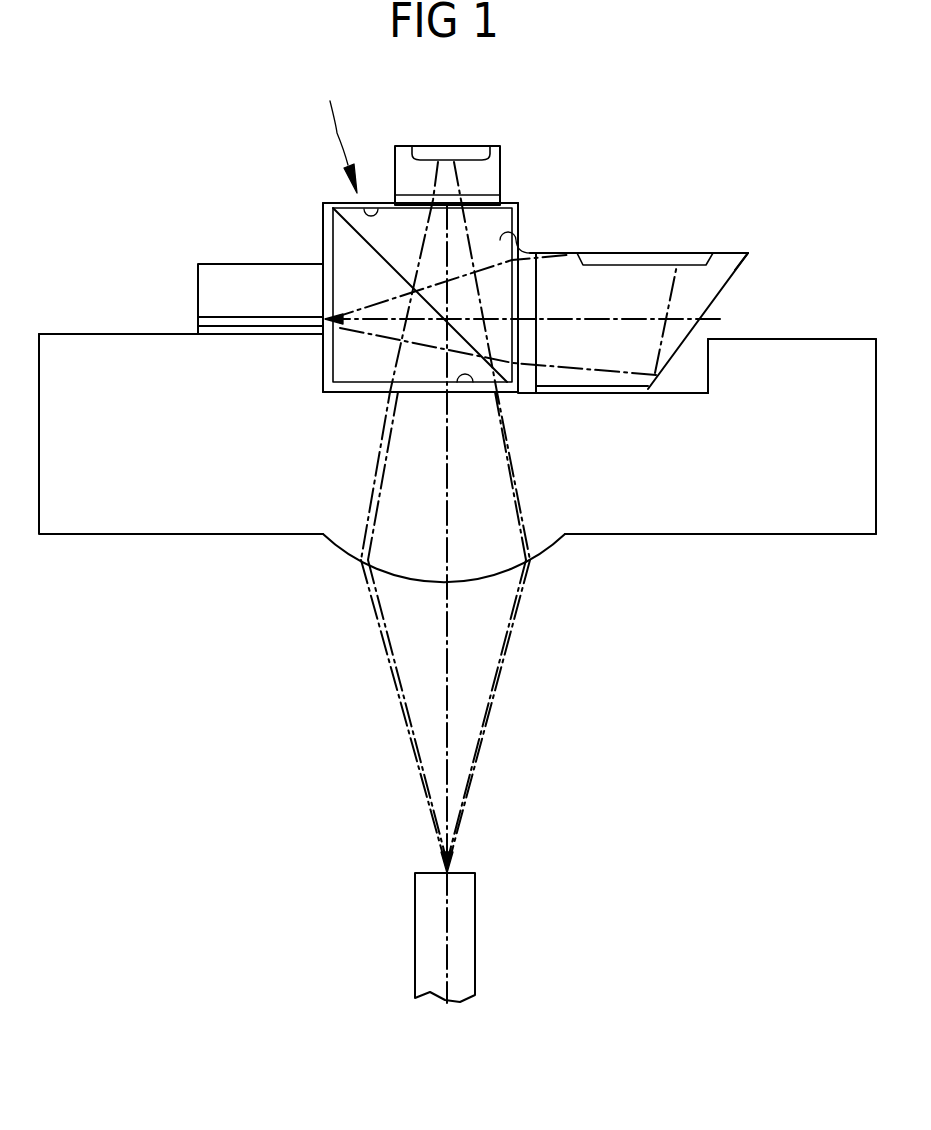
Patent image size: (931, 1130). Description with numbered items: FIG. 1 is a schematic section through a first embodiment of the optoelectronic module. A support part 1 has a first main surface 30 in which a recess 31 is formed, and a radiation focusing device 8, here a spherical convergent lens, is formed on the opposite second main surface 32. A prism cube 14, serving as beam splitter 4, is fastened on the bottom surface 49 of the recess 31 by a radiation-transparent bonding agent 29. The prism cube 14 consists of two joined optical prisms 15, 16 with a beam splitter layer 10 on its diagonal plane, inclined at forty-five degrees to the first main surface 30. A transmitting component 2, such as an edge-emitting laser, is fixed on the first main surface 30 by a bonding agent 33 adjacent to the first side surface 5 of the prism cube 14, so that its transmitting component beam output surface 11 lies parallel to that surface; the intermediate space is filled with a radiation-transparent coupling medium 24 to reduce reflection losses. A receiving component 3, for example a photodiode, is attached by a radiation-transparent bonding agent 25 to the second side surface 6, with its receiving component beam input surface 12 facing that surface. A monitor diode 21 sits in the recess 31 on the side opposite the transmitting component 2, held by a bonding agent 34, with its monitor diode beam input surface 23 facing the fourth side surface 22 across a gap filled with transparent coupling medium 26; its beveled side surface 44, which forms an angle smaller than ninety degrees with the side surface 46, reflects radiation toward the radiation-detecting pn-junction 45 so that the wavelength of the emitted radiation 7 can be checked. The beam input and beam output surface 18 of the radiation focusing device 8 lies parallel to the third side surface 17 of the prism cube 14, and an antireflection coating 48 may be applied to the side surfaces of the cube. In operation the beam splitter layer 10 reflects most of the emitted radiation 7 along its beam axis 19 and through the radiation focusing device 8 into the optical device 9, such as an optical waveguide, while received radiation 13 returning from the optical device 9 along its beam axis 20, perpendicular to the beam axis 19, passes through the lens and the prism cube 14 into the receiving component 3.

The support part 1 is at (704, 522).
The transmitting component 2 is at (217, 272).
The receiving component 3 is at (490, 145).
The beam splitter 4 is at (331, 132).
The prism cube 14 is at (348, 165).
The first side surface 5 is at (330, 222).
The second side surface 6 is at (375, 205).
The emitted radiation 7 is at (392, 340).
The radiation focusing device 8 is at (415, 580).
The optical device 9 is at (468, 933).
The beam splitter layer 10 is at (400, 257).
The transmitting component beam output surface 11 is at (320, 312).
The receiving component beam input surface 12 is at (492, 190).
The received radiation 13 is at (518, 511).
The optical prism 15 is at (518, 210).
The optical prism 16 is at (327, 203).
The third side surface 17 is at (465, 398).
The beam input and beam output surface 18 is at (440, 398).
The beam axis of the emitted radiation 19 is at (717, 317).
The beam axis of the received radiation 20 is at (489, 724).
The monitor diode 21 is at (733, 263).
The fourth side surface 22 is at (518, 234).
The monitor diode beam input surface 23 is at (539, 287).
The radiation-transparent coupling medium 24 is at (330, 257).
The radiation-transparent bonding agent 25 is at (409, 146).
The transparent coupling medium 26 is at (528, 387).
The radiation-transparent bonding agent 29 is at (313, 392).
The first main surface 30 is at (73, 333).
The recess 31 is at (697, 373).
The second main surface 32 is at (793, 537).
The bonding agent 33 is at (195, 330).
The bonding agent 34 is at (640, 395).
The side surface 44 is at (752, 270).
The pn-junction 45 is at (648, 263).
The side surface 46 is at (698, 253).
The antireflection coating 48 is at (367, 398).
The bottom surface 49 is at (693, 397).